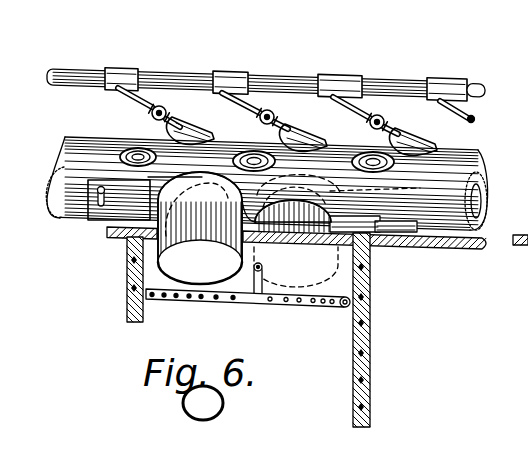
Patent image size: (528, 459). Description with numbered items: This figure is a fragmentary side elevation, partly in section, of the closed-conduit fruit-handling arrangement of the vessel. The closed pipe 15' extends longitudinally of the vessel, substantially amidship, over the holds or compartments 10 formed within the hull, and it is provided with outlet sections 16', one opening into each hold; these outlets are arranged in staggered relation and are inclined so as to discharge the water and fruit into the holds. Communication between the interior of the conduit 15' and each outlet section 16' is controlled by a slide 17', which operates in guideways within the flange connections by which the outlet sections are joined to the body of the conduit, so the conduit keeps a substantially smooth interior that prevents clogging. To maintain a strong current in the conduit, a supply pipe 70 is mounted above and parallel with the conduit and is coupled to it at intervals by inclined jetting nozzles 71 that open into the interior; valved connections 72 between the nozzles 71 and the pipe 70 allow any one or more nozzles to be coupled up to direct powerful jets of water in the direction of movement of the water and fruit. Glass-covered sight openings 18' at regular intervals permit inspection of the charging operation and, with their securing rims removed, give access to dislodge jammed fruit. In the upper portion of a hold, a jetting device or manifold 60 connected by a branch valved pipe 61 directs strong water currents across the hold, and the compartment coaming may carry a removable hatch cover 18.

The supply pipe 70 is at (291, 82).
The valved connections 72 is at (163, 107).
The inclined jetting nozzles 71 is at (188, 124).
The closed pipe 15' is at (284, 172).
The glass-covered sight openings 18' is at (228, 166).
The slide 17' is at (247, 228).
The removable hatch cover 18 is at (317, 253).
The holds or compartments 10 is at (267, 330).
The outlet sections 16' is at (244, 253).
The branch valved pipe 61 is at (262, 285).
The jetting device or manifold 60 is at (246, 300).